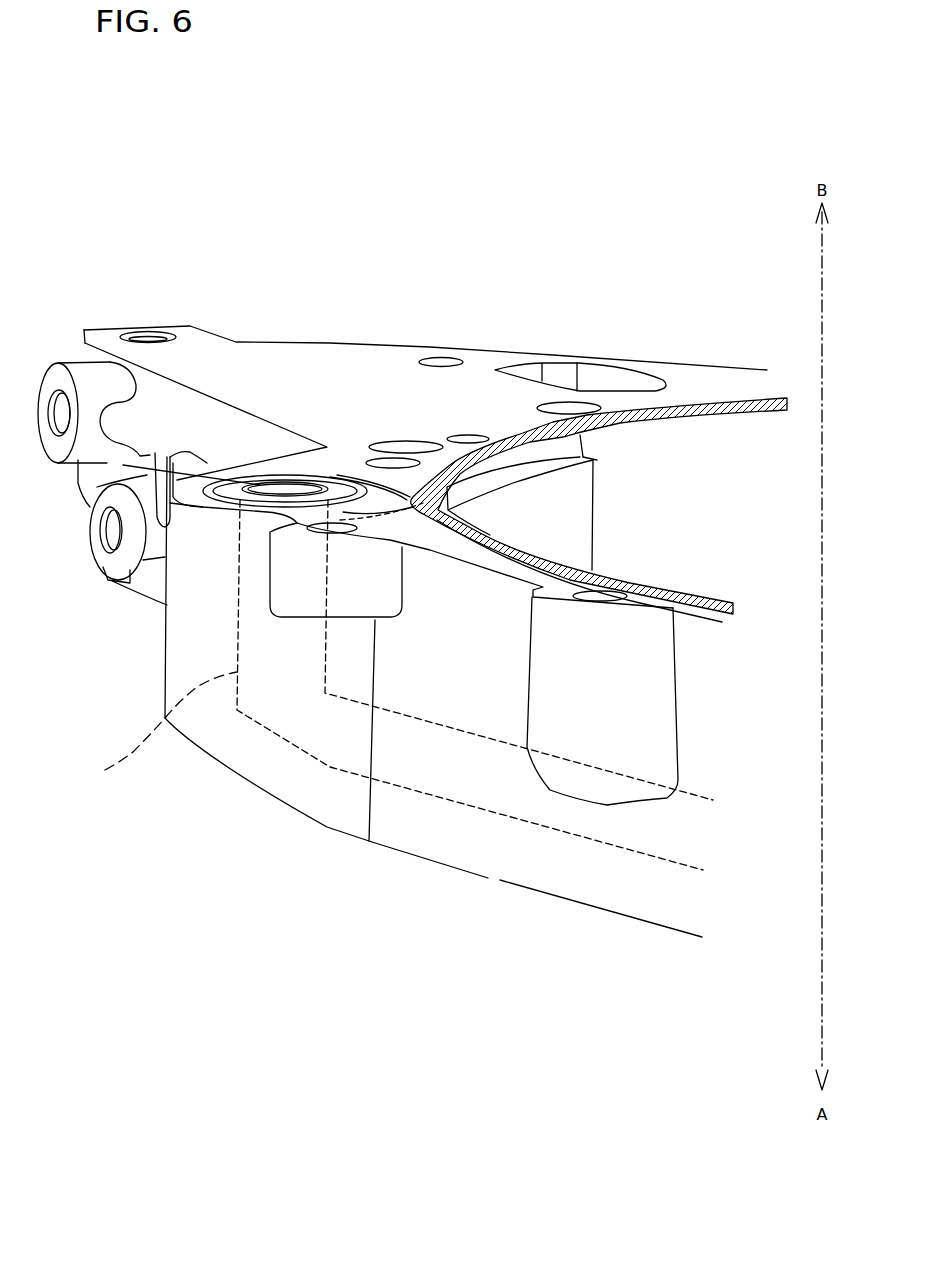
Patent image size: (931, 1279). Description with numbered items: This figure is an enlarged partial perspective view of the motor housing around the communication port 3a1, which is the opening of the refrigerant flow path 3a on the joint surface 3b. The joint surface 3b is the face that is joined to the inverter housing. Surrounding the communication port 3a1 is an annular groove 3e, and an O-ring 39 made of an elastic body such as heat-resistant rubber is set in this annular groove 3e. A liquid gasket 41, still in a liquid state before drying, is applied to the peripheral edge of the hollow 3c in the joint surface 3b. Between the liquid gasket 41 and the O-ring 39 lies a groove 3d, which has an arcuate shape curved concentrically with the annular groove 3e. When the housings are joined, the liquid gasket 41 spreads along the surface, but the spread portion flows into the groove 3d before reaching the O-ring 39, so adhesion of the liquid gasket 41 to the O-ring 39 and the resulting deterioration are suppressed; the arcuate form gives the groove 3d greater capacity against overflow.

The refrigerant flow path 3a is at (385, 697).
The communication port 3a1 is at (260, 483).
The joint surface 3b is at (318, 345).
The hollow 3c is at (738, 437).
The groove 3d is at (355, 477).
The annular groove 3e is at (207, 485).
The O-ring 39 is at (165, 587).
The liquid gasket 41 is at (630, 585).